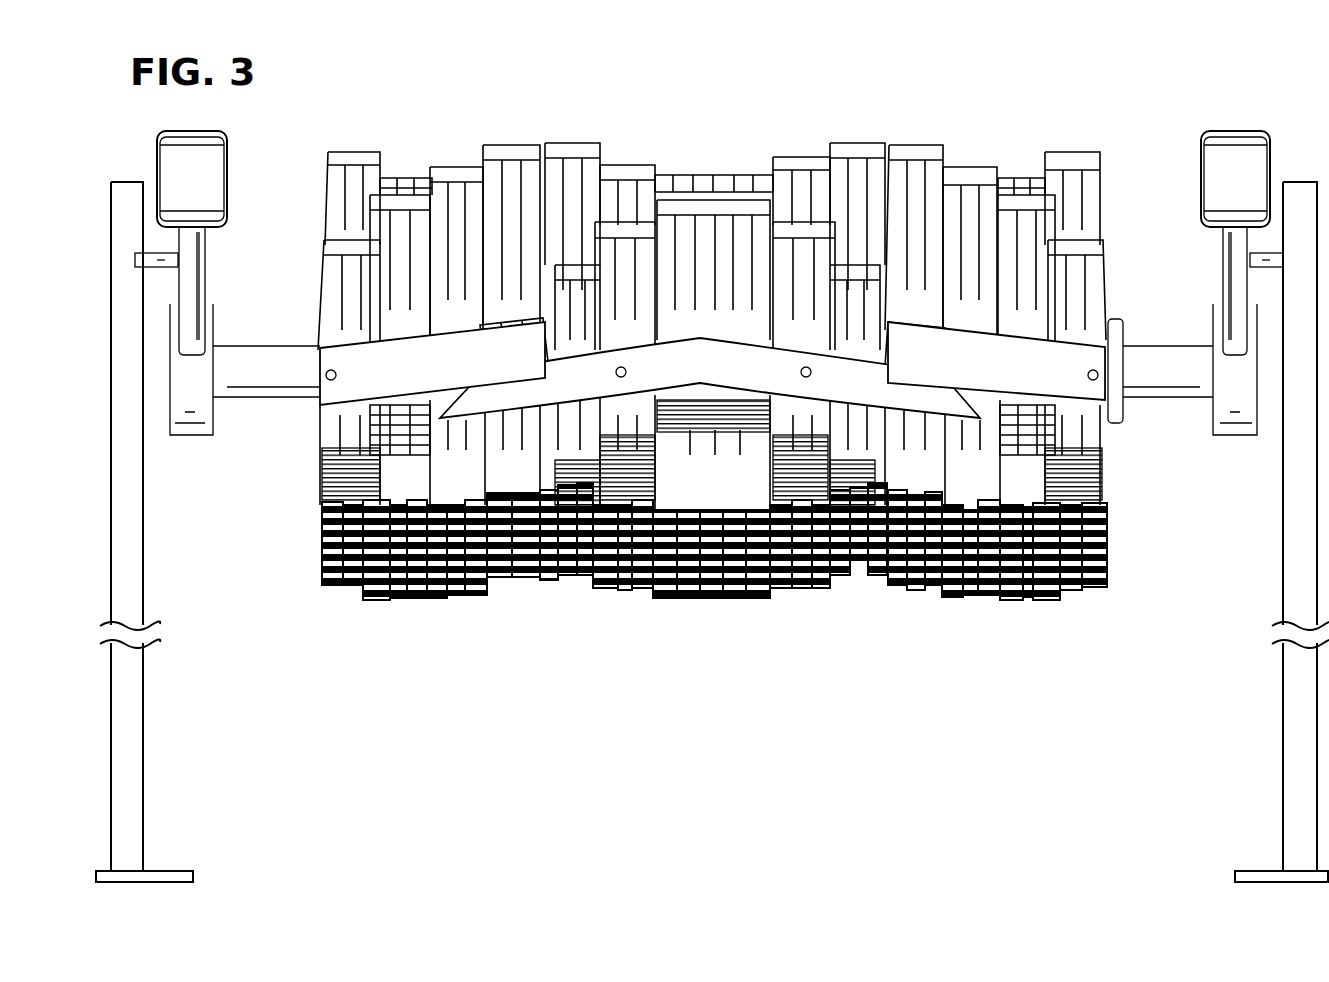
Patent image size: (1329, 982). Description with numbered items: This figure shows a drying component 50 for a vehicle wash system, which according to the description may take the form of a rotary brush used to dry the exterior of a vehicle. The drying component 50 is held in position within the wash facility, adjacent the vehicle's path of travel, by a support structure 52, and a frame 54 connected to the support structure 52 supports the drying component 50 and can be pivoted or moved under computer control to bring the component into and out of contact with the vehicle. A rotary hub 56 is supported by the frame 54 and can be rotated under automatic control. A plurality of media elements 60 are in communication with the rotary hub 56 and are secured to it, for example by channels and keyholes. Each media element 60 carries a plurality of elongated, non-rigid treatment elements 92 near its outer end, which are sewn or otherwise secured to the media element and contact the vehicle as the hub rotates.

The drying component 50 is at (937, 105).
The support structure 52 is at (1286, 536).
The frame 54 is at (1230, 128).
The rotary hub 56 is at (1062, 358).
The media elements 60 is at (585, 138).
The treatment elements 92 is at (990, 648).